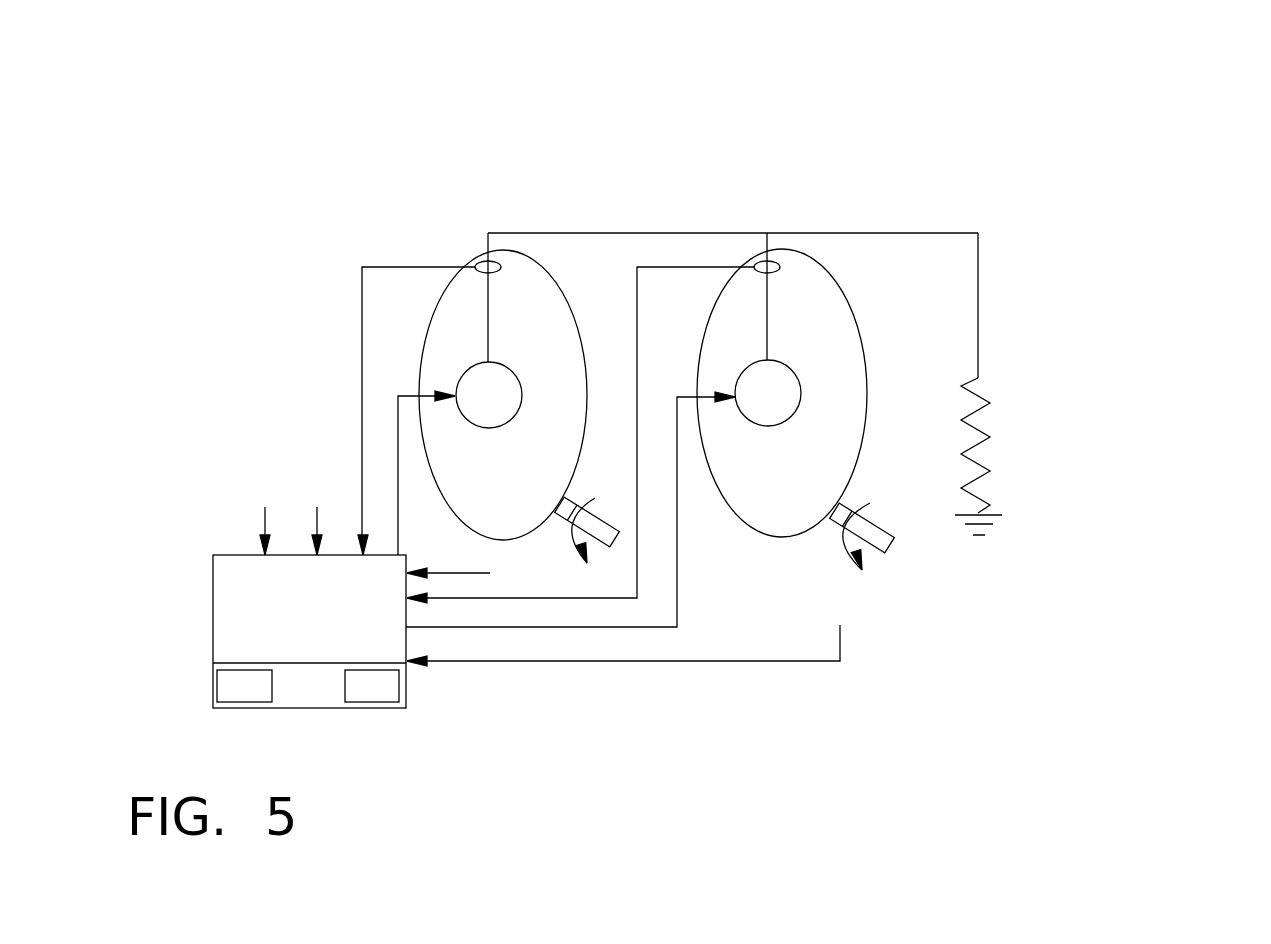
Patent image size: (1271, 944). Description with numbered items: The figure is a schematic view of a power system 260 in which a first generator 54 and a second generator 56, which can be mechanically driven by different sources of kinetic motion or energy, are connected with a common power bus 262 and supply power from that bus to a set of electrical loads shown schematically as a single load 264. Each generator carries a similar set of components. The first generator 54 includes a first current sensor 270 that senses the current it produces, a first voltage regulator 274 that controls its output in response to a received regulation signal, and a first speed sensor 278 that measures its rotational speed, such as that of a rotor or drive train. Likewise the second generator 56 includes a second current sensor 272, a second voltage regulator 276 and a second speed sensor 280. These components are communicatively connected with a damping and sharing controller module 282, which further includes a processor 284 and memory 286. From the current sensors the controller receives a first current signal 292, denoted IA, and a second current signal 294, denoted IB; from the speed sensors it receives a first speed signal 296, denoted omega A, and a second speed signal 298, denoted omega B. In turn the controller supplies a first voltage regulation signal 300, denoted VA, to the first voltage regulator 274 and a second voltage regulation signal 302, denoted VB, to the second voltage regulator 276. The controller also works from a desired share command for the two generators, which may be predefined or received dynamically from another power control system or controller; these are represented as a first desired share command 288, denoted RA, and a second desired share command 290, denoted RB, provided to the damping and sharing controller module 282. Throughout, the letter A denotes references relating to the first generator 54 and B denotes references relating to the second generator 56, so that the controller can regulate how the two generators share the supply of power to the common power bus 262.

The power system 260 is at (657, 81).
The first generator 54 is at (548, 272).
The second generator 56 is at (828, 270).
The first current sensor 270 is at (478, 262).
The second current sensor 272 is at (757, 265).
The first voltage regulator 274 is at (507, 362).
The second voltage regulator 276 is at (785, 360).
The first speed sensor 278 is at (608, 503).
The second speed sensor 280 is at (915, 458).
The common power bus 262 is at (980, 272).
The load 264 is at (1072, 437).
The first desired share command 288 is at (255, 473).
The second desired share command 290 is at (308, 467).
The first current signal 292 is at (362, 310).
The second current signal 294 is at (637, 272).
The first speed signal 296 is at (462, 573).
The second speed signal 298 is at (538, 662).
The first voltage regulation signal 300 is at (398, 443).
The second voltage regulation signal 302 is at (630, 628).
The damping and sharing controller module 282 is at (332, 698).
The processor 284 is at (244, 686).
The memory 286 is at (372, 686).